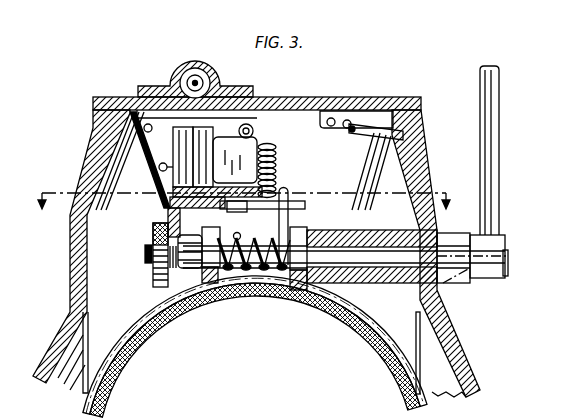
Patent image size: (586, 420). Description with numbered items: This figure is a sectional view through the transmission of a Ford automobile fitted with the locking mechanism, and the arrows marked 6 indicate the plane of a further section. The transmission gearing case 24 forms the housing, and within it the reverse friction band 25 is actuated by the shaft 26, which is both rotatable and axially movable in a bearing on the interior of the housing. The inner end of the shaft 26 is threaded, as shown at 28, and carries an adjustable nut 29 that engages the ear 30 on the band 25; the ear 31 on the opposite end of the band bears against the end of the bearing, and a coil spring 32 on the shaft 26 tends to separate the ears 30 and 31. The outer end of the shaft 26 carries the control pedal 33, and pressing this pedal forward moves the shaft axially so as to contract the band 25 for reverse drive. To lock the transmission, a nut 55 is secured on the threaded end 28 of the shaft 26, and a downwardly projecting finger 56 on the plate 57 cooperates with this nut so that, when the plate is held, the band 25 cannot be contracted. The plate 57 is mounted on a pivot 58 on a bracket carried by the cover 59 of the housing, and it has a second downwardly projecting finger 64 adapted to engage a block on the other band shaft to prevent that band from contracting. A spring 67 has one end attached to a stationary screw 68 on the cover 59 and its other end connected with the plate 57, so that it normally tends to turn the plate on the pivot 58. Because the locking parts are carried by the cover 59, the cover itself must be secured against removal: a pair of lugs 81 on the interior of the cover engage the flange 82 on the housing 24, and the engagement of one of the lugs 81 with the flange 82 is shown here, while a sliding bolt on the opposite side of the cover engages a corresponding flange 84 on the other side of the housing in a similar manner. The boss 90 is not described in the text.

The section line 6 is at (247, 210).
The transmission gearing case 24 is at (77, 291).
The reverse friction band 25 is at (133, 336).
The shaft 26 is at (388, 252).
The threaded inner end 28 is at (144, 253).
The nut 29 is at (190, 270).
The ear 30 is at (236, 280).
The ear 31 is at (301, 291).
The coil spring 32 is at (248, 273).
The control pedal 33 is at (500, 160).
The nut 55 is at (153, 278).
The downwardly projecting finger 56 is at (180, 220).
The plate 57 is at (248, 224).
The pivot 58 is at (238, 231).
The cover 59 is at (349, 102).
The downwardly projecting finger 64 is at (307, 226).
The spring 67 is at (268, 150).
The stationary screw 68 is at (253, 132).
The lug 81 is at (406, 136).
The flange 82 is at (404, 120).
The flange 84 is at (126, 152).
The pivot boss 90 is at (199, 82).